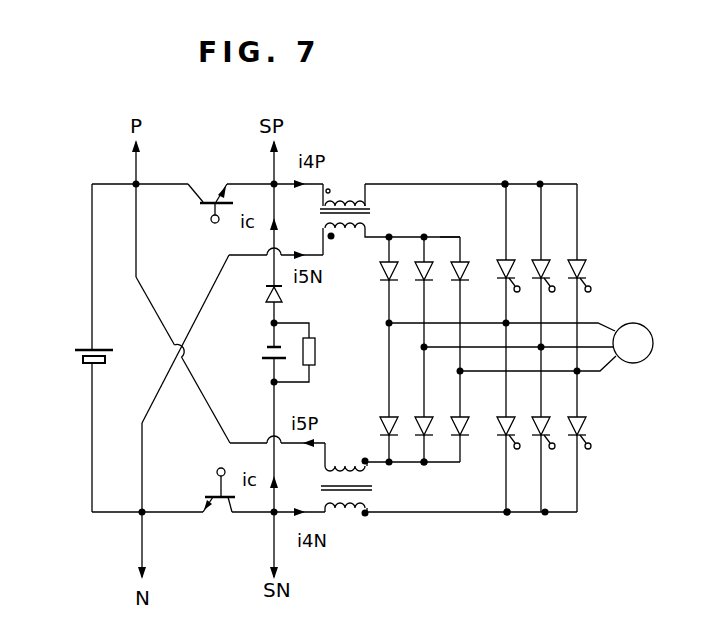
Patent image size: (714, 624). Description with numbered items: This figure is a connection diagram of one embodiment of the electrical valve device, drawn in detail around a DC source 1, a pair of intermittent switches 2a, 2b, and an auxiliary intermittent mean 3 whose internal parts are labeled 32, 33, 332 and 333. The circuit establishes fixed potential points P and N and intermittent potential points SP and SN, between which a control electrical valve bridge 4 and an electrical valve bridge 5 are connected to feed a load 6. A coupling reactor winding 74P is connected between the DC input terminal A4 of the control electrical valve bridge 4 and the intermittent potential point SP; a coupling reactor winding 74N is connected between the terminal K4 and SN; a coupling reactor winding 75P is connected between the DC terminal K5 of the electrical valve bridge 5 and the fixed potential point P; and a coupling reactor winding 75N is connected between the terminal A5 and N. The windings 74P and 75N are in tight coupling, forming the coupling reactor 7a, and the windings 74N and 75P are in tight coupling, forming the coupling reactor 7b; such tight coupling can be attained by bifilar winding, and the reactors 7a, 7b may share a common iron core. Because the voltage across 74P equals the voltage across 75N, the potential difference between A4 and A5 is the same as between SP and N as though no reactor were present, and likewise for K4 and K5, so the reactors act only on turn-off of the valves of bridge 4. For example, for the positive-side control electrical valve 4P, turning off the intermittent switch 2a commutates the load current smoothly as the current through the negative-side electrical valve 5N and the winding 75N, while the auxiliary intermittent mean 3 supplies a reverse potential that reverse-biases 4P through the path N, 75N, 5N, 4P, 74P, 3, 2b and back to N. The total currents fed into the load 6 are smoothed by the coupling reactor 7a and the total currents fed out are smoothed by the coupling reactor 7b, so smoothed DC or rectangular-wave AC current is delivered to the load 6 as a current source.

The DC power source (battery) 1 is at (76, 358).
The intermittent switch 2a is at (190, 187).
The intermittent switch 2b is at (208, 494).
The auxiliary intermittent mean 3 is at (220, 345).
The diode 32 is at (266, 292).
The bias source 33 is at (282, 352).
The resistor 332 is at (315, 360).
The battery 333 is at (244, 362).
The control electrical valve bridge 4 is at (558, 315).
The control electrical valve 4P is at (553, 235).
The electrical valve bridge 5 is at (407, 324).
The electrical valve 5N is at (385, 288).
The load 6 is at (630, 330).
The coupling reactor 7a is at (390, 203).
The coupling reactor 7b is at (377, 484).
The coupling reactor winding 74P is at (345, 185).
The coupling reactor winding 74N is at (345, 511).
The coupling reactor winding 75N is at (343, 246).
The coupling reactor winding 75P is at (339, 459).
The DC input terminal A4 is at (504, 182).
The DC terminal A5 is at (467, 235).
The DC terminal K4 is at (490, 513).
The DC terminal K5 is at (412, 463).